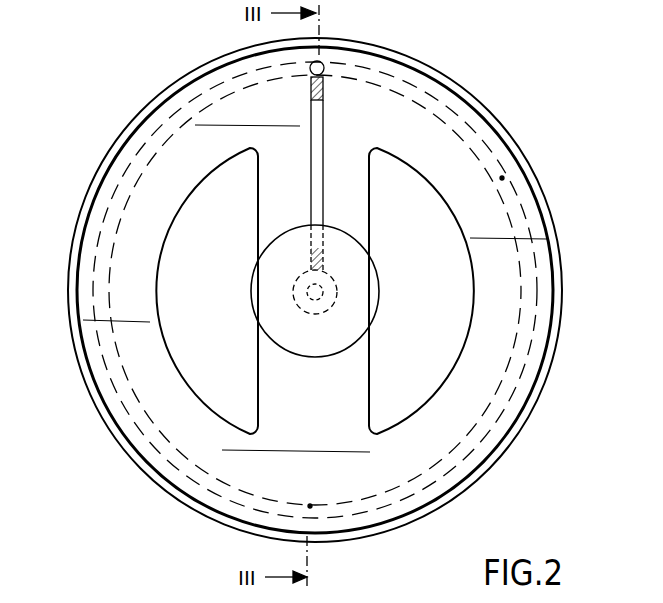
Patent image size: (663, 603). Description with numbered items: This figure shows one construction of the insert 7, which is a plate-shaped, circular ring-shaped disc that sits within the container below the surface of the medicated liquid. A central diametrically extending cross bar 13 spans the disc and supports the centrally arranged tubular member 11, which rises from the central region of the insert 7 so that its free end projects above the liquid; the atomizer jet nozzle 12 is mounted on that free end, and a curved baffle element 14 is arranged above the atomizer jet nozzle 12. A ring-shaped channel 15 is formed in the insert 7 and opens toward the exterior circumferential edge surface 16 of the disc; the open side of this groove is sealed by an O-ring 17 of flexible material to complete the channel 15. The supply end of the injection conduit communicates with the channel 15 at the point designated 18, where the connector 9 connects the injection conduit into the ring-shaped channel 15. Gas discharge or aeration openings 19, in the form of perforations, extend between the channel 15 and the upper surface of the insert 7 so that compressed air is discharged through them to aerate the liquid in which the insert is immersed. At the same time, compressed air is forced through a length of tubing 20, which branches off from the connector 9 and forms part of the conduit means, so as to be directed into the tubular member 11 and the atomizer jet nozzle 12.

The insert 7 is at (322, 306).
The connector 9 is at (325, 68).
The tubular member 11 is at (335, 276).
The atomizer jet nozzle 12 is at (320, 294).
The cross bar 13 is at (268, 200).
The curved baffle element 14 is at (283, 332).
The ring-shaped channel 15 is at (528, 262).
The exterior circumferential edge surface 16 is at (513, 428).
The O-ring 17 is at (474, 488).
The point of communication 18 is at (309, 71).
The aeration openings 19 is at (130, 177).
The tubing 20 is at (323, 143).